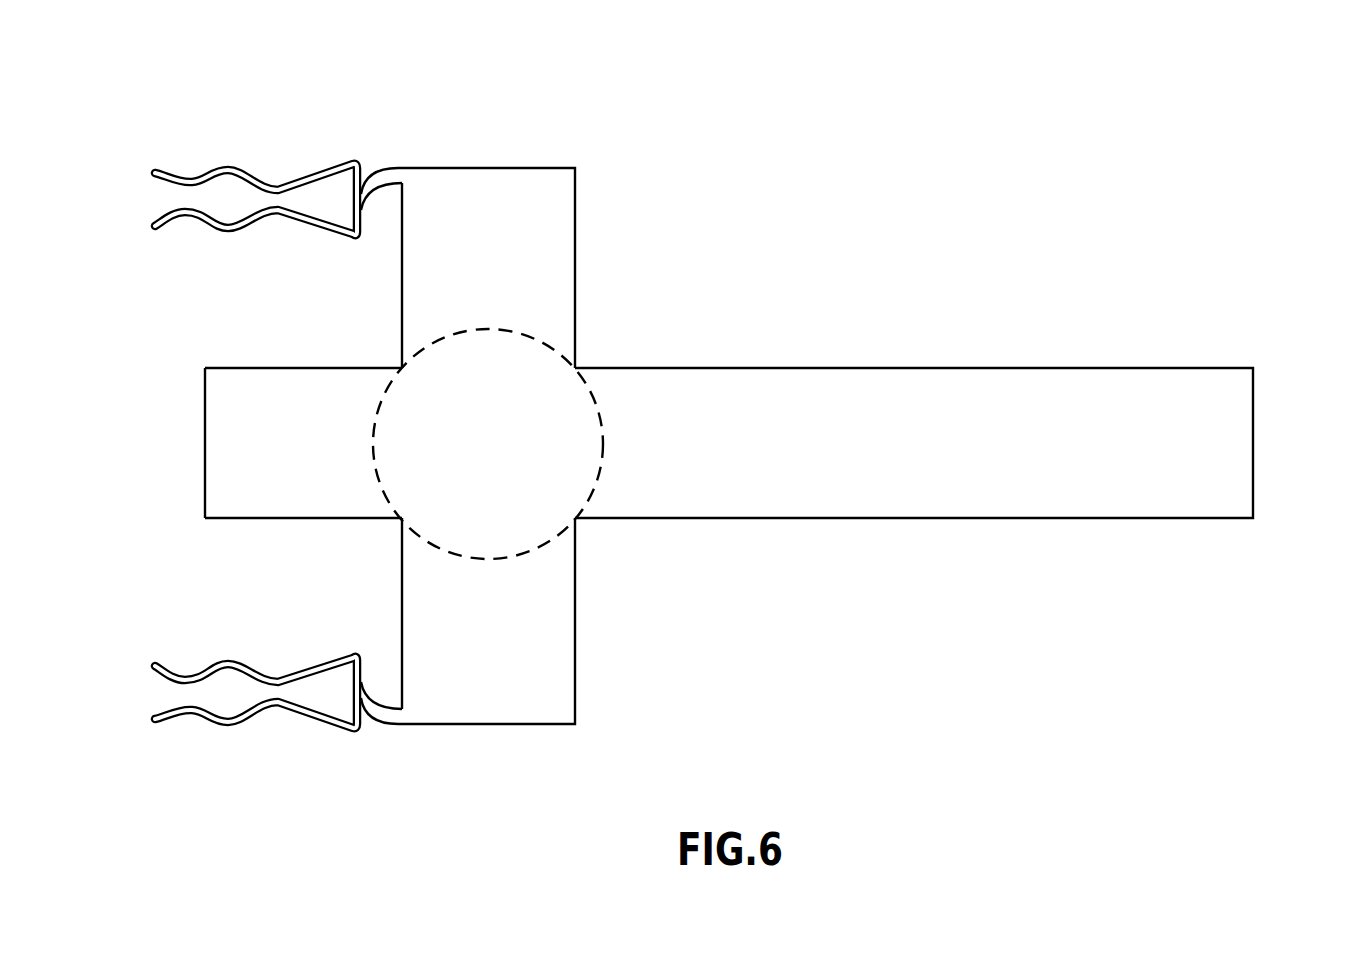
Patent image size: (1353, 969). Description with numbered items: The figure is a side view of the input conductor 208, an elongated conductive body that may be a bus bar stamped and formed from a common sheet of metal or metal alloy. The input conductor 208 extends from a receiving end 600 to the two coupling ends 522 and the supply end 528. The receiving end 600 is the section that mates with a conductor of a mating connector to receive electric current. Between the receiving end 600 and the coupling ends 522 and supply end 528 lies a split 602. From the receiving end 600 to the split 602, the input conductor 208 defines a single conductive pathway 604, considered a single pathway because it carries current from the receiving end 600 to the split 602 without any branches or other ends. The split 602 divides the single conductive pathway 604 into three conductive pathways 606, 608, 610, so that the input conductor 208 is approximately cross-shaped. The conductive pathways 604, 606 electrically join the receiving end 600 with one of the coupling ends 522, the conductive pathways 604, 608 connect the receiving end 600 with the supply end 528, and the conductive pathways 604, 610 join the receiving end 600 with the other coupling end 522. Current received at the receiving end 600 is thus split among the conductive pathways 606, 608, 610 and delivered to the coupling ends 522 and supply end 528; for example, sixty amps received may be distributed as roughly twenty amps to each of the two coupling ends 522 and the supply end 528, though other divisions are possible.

The input conductor 208 is at (880, 190).
The coupling ends 522 is at (153, 172).
The supply end 528 is at (205, 437).
The receiving end 600 is at (1253, 437).
The split 602 is at (603, 420).
The single conductive pathway 604 is at (1253, 532).
The conductive pathway 606 is at (585, 168).
The conductive pathway 608 is at (388, 360).
The conductive pathway 610 is at (587, 523).